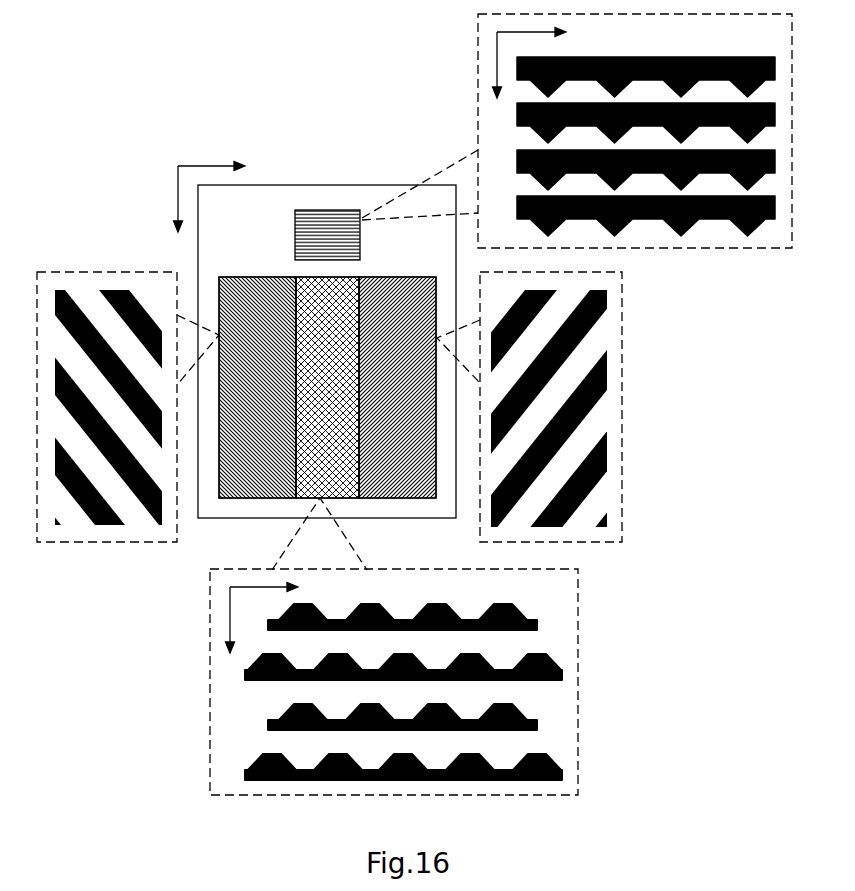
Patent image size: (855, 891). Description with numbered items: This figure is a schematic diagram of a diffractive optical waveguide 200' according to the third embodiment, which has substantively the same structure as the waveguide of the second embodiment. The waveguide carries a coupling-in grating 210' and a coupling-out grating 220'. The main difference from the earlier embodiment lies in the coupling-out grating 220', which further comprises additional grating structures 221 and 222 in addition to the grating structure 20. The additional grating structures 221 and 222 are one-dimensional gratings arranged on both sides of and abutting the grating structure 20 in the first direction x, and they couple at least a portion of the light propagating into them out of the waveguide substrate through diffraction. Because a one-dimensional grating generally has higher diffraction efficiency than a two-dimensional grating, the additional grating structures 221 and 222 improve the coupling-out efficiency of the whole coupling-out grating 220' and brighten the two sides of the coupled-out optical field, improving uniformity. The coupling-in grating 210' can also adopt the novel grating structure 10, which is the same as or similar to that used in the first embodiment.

The diffractive optical waveguide 200' is at (314, 318).
The coupling-in grating 210' is at (288, 235).
The coupling-out grating 220' is at (284, 444).
The additional grating structure 221 is at (124, 257).
The additional grating structure 222 is at (630, 391).
The grating structure 10 is at (696, 260).
The grating structure 20 is at (594, 684).